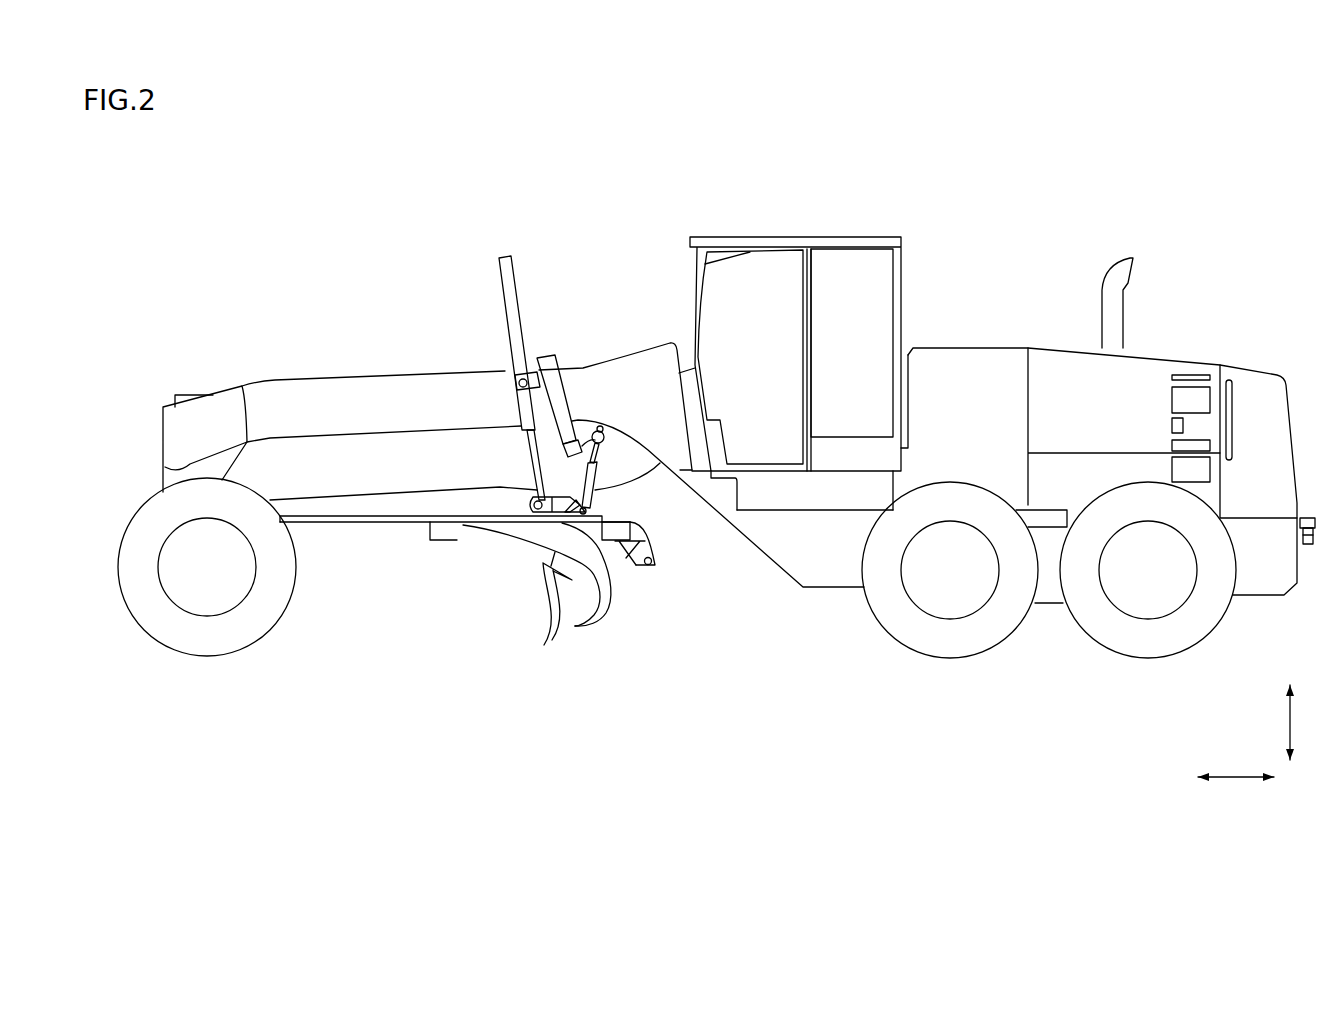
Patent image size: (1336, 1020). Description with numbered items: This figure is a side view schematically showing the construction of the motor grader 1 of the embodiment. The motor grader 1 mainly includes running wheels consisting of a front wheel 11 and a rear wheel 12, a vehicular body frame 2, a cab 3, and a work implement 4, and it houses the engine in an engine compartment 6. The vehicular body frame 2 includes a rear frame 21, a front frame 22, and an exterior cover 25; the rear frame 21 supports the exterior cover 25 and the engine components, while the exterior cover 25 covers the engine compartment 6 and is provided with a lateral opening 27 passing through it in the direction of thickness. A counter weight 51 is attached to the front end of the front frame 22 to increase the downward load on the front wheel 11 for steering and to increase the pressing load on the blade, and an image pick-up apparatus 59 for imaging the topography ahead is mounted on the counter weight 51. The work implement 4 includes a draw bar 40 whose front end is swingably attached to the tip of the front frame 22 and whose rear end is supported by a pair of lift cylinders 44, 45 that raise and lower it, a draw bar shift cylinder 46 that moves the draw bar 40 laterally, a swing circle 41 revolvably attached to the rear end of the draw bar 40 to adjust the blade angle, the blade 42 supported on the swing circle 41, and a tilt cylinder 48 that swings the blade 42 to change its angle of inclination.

The motor grader 1 is at (357, 170).
The vehicular body frame 2 is at (601, 303).
The cab 3 is at (848, 238).
The work implement 4 is at (487, 604).
The engine compartment 6 is at (1061, 400).
The front wheel 11 is at (209, 633).
The rear wheel 12 is at (951, 637).
The rear frame 21 is at (1048, 582).
The front frame 22 is at (334, 405).
The exterior cover 25 is at (1145, 356).
The lateral opening 27 is at (1192, 397).
The draw bar 40 is at (359, 514).
The swing circle 41 is at (452, 531).
The blade 42 is at (548, 617).
The lift cylinder 44 is at (514, 384).
The lift cylinder 45 is at (508, 295).
The draw bar shift cylinder 46 is at (603, 491).
The tilt cylinder 48 is at (626, 567).
The counter weight 51 is at (176, 438).
The image pick-up apparatus 59 is at (184, 394).